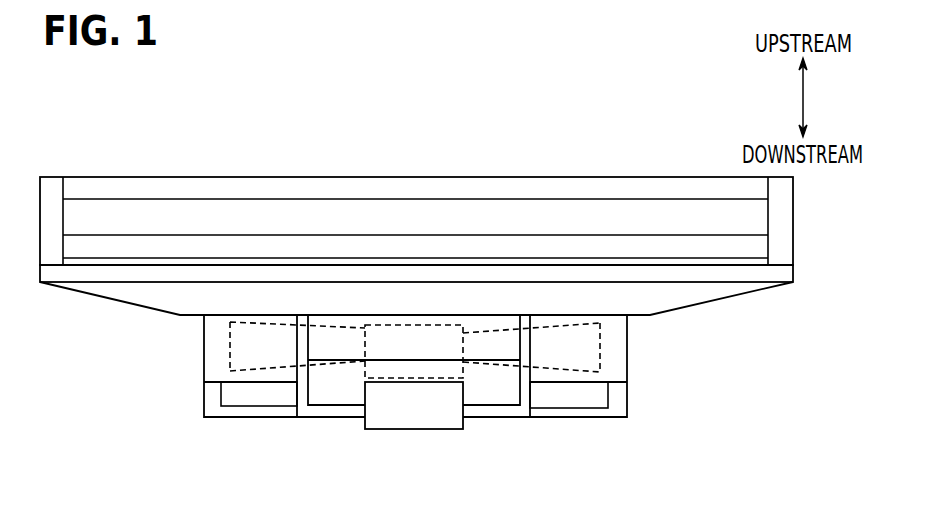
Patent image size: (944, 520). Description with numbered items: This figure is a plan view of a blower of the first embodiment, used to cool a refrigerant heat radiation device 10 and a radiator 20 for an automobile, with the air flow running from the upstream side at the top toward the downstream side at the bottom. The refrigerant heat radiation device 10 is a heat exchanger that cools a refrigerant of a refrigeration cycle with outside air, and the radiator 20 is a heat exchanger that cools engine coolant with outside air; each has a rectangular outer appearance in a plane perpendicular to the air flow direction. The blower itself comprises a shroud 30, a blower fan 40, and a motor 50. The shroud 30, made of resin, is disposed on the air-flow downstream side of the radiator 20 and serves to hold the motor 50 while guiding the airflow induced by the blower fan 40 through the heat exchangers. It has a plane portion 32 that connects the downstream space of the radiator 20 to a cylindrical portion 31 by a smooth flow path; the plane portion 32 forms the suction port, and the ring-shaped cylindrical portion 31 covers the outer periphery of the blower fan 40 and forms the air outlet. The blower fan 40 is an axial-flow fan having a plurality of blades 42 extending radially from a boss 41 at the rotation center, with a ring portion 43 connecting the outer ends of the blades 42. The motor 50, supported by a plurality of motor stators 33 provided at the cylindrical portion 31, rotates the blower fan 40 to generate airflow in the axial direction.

The refrigerant heat radiation device 10 is at (750, 189).
The radiator 20 is at (750, 246).
The shroud 30 is at (719, 303).
The cylindrical portion 31 is at (255, 383).
The plane portion 32 is at (77, 272).
The motor stators 33 is at (205, 400).
The blower fan 40 is at (464, 371).
The boss 41 is at (361, 370).
The blades 42 is at (247, 345).
The ring portion 43 is at (600, 343).
The motor 50 is at (441, 404).